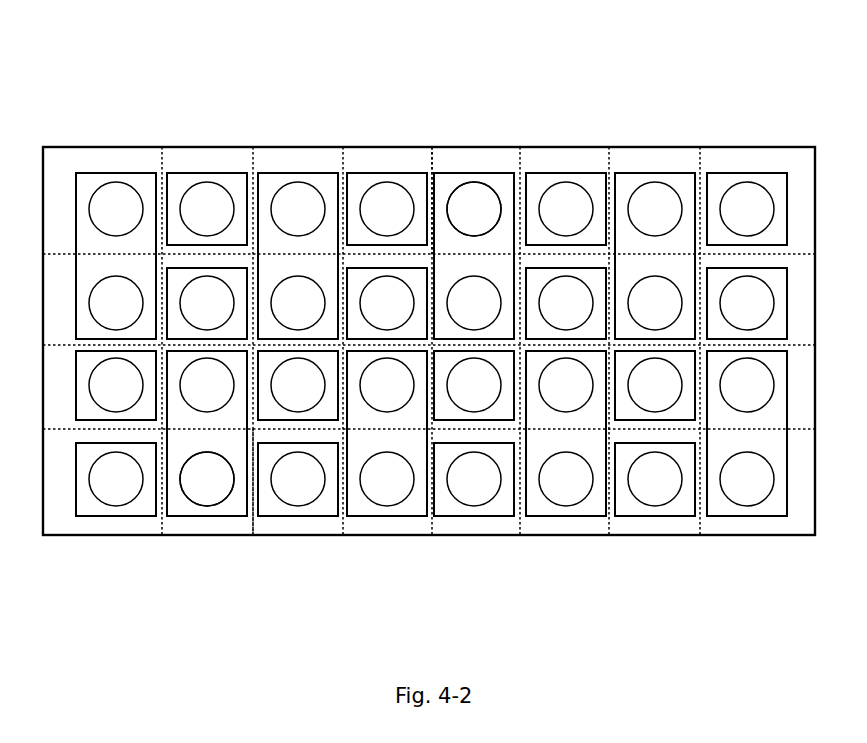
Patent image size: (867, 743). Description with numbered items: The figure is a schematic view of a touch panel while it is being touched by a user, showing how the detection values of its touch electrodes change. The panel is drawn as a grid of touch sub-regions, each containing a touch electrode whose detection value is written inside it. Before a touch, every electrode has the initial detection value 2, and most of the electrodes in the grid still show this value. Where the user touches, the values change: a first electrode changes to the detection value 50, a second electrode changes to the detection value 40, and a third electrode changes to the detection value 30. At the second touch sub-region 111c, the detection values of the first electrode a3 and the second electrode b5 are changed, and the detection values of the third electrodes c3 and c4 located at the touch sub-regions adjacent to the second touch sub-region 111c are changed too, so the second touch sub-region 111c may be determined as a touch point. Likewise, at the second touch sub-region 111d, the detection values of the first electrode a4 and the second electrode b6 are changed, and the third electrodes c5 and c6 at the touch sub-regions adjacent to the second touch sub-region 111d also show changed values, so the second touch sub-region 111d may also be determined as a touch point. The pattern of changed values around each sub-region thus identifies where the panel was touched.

The initial detection value 2 is at (431, 344).
The changed detection value of third electrode 30 is at (431, 344).
The changed detection value of second electrode 40 is at (340, 344).
The changed detection value of first electrode 50 is at (340, 344).
The second touch sub-region 111c is at (445, 156).
The second touch sub-region 111d is at (238, 519).
The first electrode a3 is at (478, 181).
The first electrode a4 is at (207, 506).
The second electrode b5 is at (505, 173).
The second electrode b6 is at (176, 515).
The third electrode c3 is at (597, 173).
The third electrode c4 is at (418, 173).
The third electrode c5 is at (142, 516).
The third electrode c6 is at (327, 516).